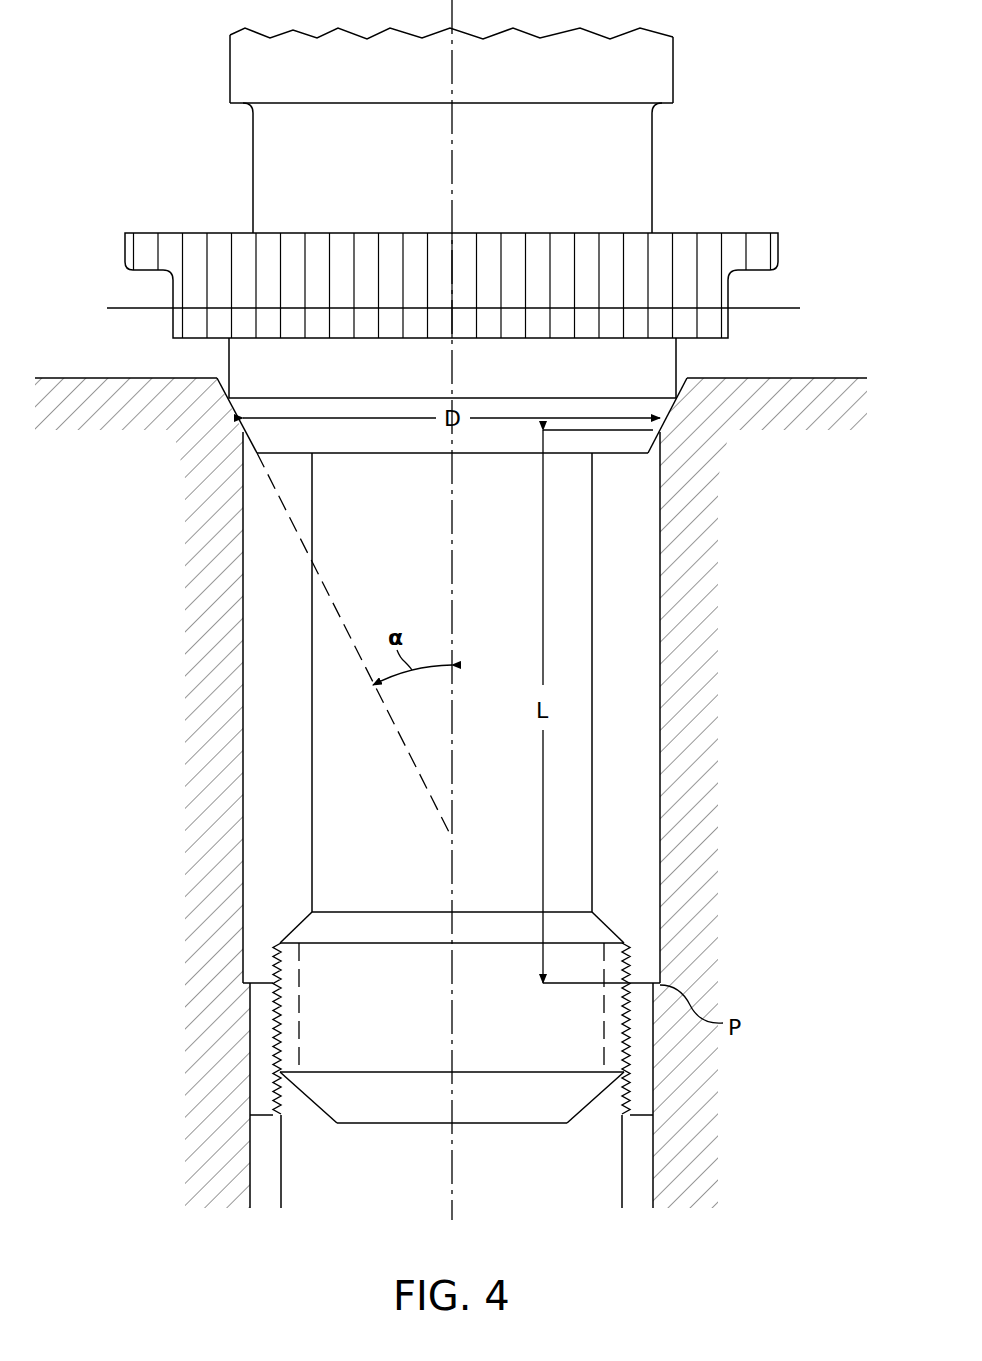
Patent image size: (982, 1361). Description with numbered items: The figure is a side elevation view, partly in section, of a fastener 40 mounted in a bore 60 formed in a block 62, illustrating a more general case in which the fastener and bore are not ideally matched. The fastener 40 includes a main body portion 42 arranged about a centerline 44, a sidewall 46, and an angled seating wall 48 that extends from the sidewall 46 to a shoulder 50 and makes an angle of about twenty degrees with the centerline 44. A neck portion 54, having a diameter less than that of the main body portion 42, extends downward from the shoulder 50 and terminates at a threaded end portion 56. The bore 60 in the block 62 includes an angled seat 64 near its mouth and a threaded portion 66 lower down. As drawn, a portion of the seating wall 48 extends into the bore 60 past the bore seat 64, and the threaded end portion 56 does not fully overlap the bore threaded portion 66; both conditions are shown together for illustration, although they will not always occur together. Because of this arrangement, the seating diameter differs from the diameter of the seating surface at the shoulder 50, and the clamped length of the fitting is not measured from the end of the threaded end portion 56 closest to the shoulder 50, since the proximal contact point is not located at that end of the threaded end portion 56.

The fastener 40 is at (160, 137).
The main body portion 42 is at (638, 167).
The centerline 44 is at (453, 133).
The sidewall 46 is at (678, 353).
The angled seating wall 48 is at (652, 447).
The shoulder 50 is at (620, 455).
The neck portion 54 is at (593, 548).
The threaded end portion 56 is at (513, 1017).
The bore 60 is at (260, 533).
The block 62 is at (120, 479).
The angled seat 64 is at (226, 379).
The threaded portion 66 is at (277, 1107).